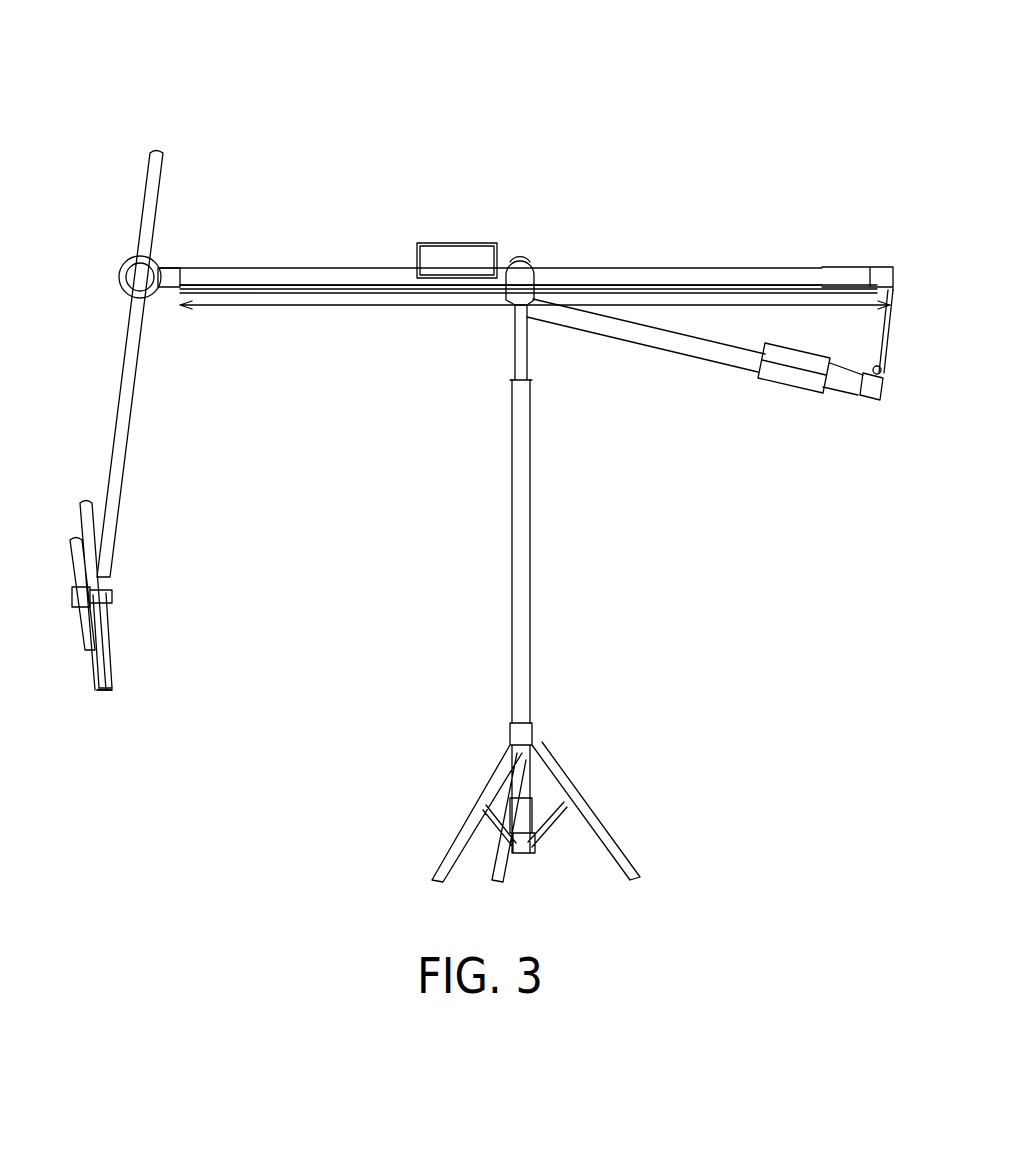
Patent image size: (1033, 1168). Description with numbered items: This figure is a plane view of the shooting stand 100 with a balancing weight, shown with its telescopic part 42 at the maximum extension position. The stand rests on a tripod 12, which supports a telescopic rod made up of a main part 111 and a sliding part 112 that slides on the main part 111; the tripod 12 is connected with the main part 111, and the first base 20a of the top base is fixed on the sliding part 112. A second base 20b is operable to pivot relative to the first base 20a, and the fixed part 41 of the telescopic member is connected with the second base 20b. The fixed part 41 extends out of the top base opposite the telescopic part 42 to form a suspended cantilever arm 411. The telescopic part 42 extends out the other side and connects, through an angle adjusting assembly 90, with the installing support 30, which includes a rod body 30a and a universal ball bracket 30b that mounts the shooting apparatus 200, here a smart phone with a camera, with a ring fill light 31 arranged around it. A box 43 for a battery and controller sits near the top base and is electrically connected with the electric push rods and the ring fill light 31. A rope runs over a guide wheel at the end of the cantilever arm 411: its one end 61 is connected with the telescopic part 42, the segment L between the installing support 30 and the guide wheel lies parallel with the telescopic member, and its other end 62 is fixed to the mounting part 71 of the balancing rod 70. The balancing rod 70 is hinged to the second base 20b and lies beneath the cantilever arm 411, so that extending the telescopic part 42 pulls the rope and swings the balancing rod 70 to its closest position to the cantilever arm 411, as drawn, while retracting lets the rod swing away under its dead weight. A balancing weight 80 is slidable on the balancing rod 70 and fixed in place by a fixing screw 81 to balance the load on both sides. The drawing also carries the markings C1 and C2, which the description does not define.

The shooting stand 100 is at (103, 41).
The angle adjusting assembly 90 is at (118, 268).
The installing support 30 is at (150, 421).
The rod body 30a is at (118, 473).
The universal ball bracket 30b is at (112, 592).
The shooting apparatus 200 is at (83, 650).
The ring fill light 31 is at (110, 693).
The one end of the rope 61 is at (203, 287).
The fixed part 41 is at (667, 267).
The telescopic part 42 is at (305, 277).
The cantilever arm 411 is at (782, 278).
The part of the rope between the installing support and the guide wheel L is at (535, 316).
The box 43 is at (453, 243).
The first base 20a is at (510, 303).
The second base 20b is at (533, 287).
The second axis C2 is at (520, 277).
The first axis C1 is at (515, 313).
The sliding part 112 is at (525, 357).
The main part 111 is at (512, 463).
The tripod 12 is at (497, 762).
The balancing rod 70 is at (680, 353).
The balancing weight 80 is at (810, 382).
The fixing screw 81 is at (787, 385).
The mounting part 71 is at (885, 380).
The other end of the rope 62 is at (888, 347).